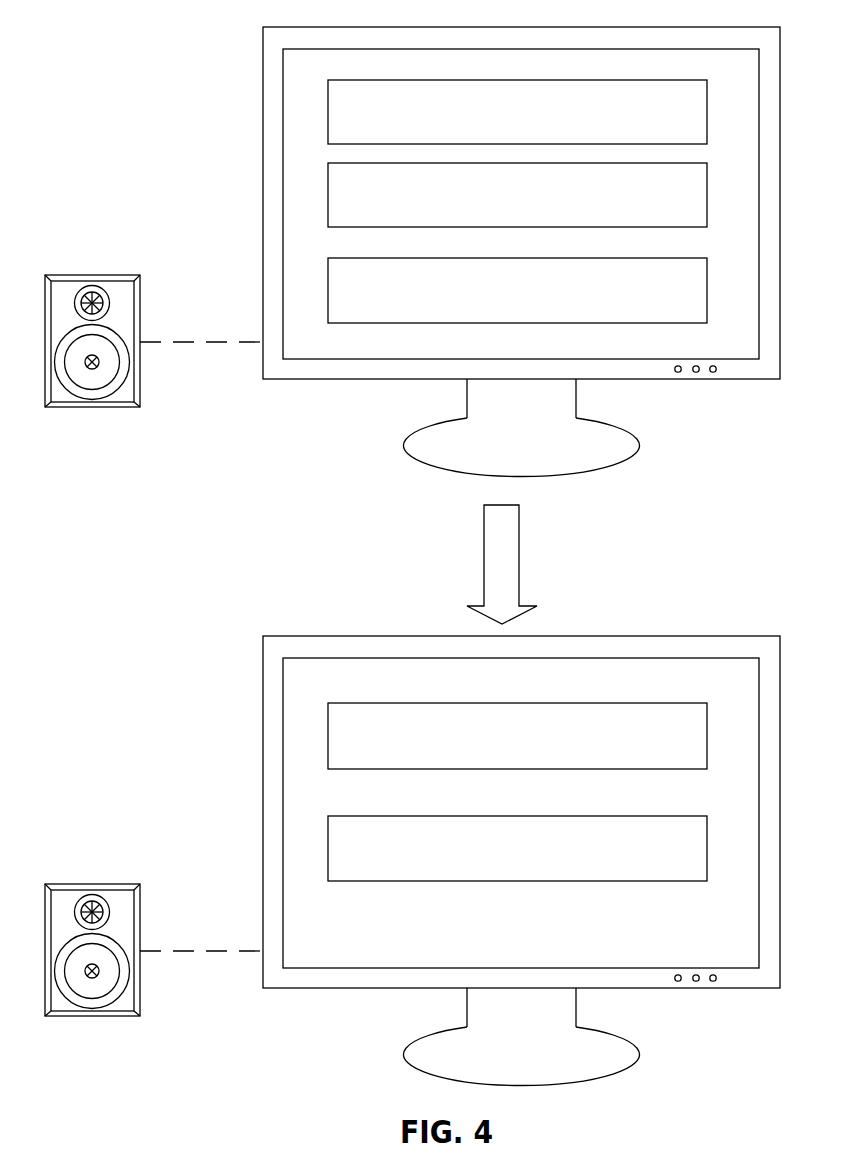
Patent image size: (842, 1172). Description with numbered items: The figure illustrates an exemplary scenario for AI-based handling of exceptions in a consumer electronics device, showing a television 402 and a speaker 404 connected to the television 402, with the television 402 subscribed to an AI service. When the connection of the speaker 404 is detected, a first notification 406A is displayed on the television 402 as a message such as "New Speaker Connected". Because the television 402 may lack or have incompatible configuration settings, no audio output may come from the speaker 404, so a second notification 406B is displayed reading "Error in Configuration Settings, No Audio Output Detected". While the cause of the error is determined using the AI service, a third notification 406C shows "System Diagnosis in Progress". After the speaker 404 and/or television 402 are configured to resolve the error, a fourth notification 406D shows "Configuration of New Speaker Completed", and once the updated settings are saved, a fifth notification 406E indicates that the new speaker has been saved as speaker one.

The television 402 is at (366, 379).
The speaker 404 is at (92, 408).
The first notification 406A is at (328, 118).
The second notification 406B is at (328, 197).
The third notification 406C is at (328, 295).
The fourth notification 406D is at (328, 736).
The fifth notification 406E is at (328, 848).